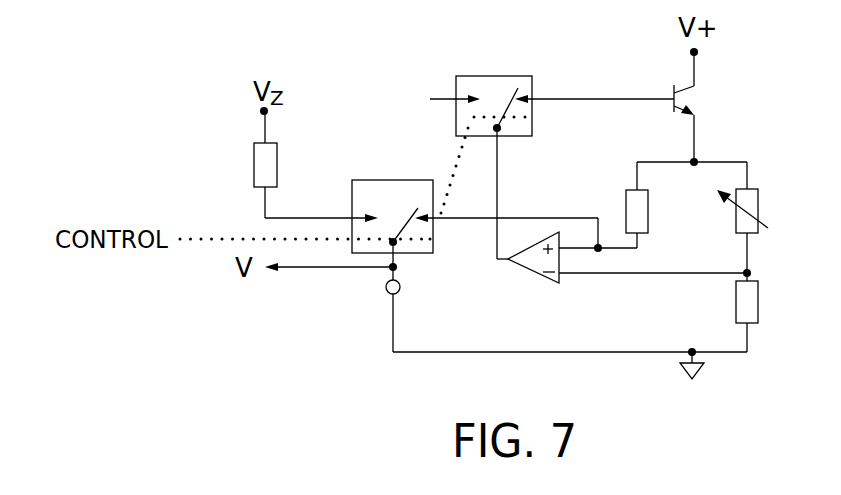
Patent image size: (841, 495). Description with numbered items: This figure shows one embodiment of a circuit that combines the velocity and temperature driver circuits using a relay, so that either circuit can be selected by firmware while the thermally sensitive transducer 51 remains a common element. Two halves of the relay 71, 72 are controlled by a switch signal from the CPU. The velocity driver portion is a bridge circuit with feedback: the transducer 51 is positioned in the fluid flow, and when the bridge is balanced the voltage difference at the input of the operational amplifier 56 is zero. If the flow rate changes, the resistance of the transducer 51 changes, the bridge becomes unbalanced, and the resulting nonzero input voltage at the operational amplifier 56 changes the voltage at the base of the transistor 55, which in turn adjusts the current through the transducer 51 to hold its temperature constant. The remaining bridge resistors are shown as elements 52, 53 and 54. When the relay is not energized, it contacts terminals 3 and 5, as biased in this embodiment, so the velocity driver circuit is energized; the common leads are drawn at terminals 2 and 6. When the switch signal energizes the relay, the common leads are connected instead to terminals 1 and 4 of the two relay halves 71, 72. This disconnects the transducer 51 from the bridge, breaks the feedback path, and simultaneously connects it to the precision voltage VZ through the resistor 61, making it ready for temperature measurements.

The terminal 1 is at (447, 98).
The relay contact K1A terminal 2 is at (576, 99).
The terminal 3 is at (509, 195).
The terminal 4 is at (321, 207).
The terminal 5 is at (506, 219).
The relay contact K1B common terminal 6 is at (403, 264).
The thermally sensitive transducer 51 is at (386, 289).
The resistor R4 52 is at (759, 297).
The resistor R1 53 is at (626, 207).
The variable resistor R2 54 is at (759, 206).
The transistor 55 is at (674, 88).
The operational amplifier 56 is at (547, 279).
The resistor 61 is at (253, 167).
The relay half 71 is at (466, 76).
The relay half 72 is at (358, 180).